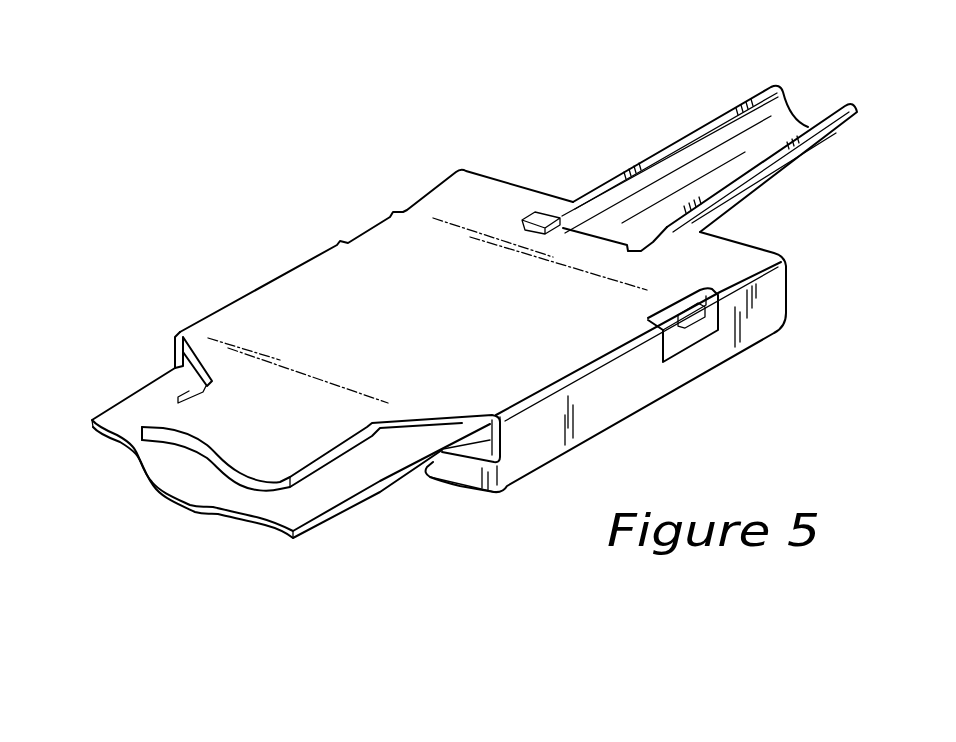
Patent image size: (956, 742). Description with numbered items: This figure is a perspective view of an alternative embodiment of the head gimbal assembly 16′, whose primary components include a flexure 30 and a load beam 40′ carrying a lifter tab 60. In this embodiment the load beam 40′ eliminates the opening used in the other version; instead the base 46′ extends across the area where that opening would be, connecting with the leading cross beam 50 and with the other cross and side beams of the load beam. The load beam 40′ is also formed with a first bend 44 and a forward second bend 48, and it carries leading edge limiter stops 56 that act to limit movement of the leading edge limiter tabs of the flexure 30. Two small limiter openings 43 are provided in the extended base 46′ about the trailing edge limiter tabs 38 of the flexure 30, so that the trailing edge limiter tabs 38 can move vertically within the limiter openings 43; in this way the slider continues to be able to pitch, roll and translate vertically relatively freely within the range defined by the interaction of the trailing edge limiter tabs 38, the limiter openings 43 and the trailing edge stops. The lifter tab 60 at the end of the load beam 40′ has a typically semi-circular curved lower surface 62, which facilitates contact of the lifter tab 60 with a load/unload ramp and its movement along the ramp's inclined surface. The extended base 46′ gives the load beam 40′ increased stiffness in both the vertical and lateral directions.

The head gimbal assembly 16′ is at (275, 207).
The flexure 30 is at (318, 527).
The trailing edge limiter tabs 38 is at (707, 323).
The load beam 40′ is at (199, 322).
The limiter openings 43 is at (382, 221).
The first bend 44 is at (497, 480).
The base 46′ is at (498, 212).
The forward second bend 48 is at (515, 408).
The leading cross beam 50 is at (428, 412).
The leading edge limiter stops 56 is at (432, 466).
The lifter tab 60 is at (687, 133).
The curved lower surface 62 is at (806, 168).